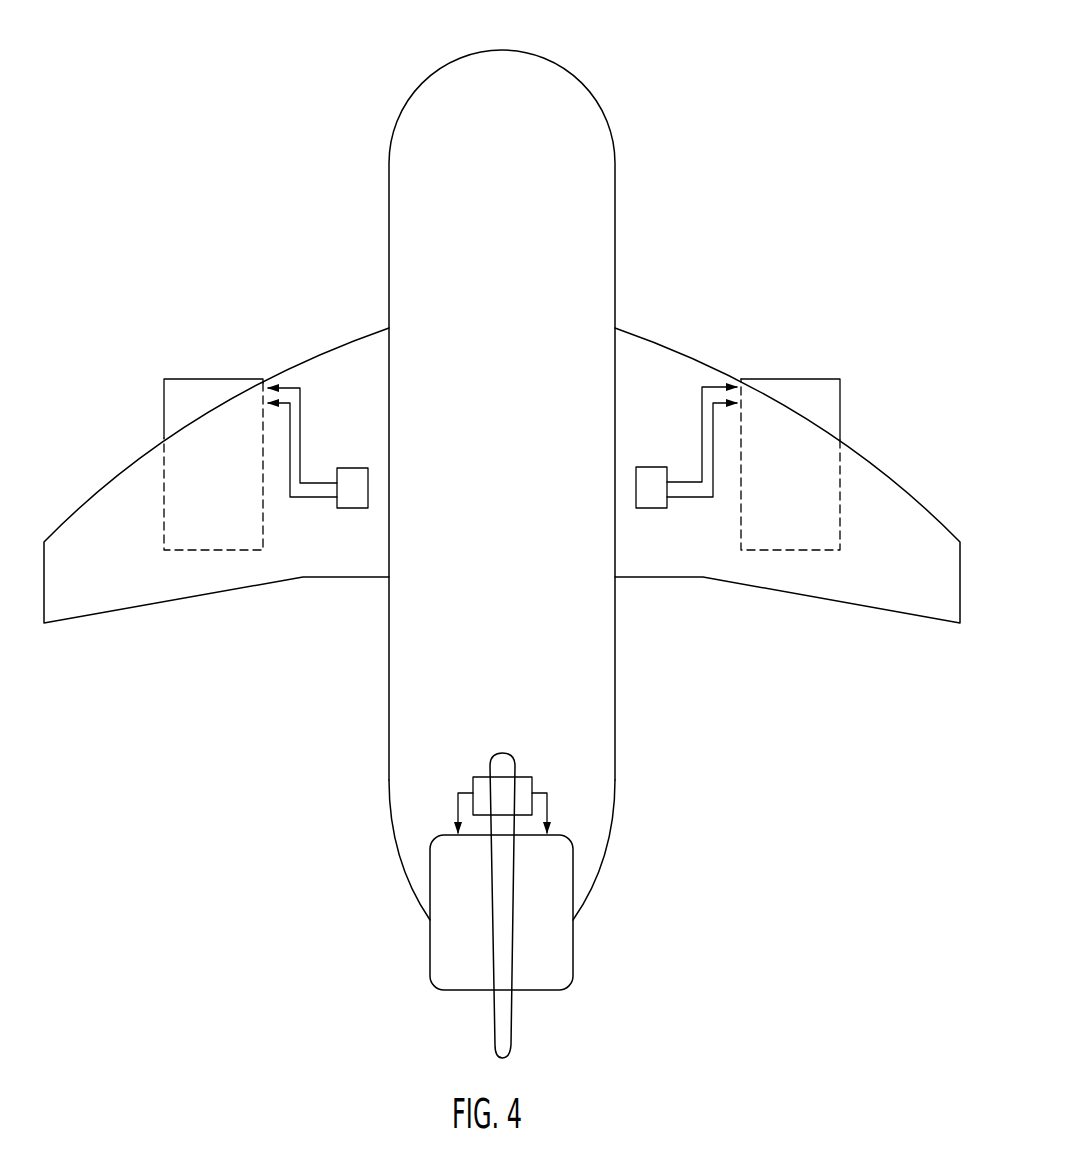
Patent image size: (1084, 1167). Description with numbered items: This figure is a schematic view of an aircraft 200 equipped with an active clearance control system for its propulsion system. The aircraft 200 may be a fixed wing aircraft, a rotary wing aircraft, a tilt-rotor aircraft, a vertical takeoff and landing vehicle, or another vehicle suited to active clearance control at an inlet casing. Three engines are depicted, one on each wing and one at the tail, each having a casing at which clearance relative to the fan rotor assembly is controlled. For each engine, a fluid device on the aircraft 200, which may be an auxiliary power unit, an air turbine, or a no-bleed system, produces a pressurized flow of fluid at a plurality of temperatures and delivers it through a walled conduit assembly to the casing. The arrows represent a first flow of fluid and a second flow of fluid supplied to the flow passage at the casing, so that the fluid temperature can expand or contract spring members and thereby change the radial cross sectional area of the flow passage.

The aircraft 200 is at (622, 76).